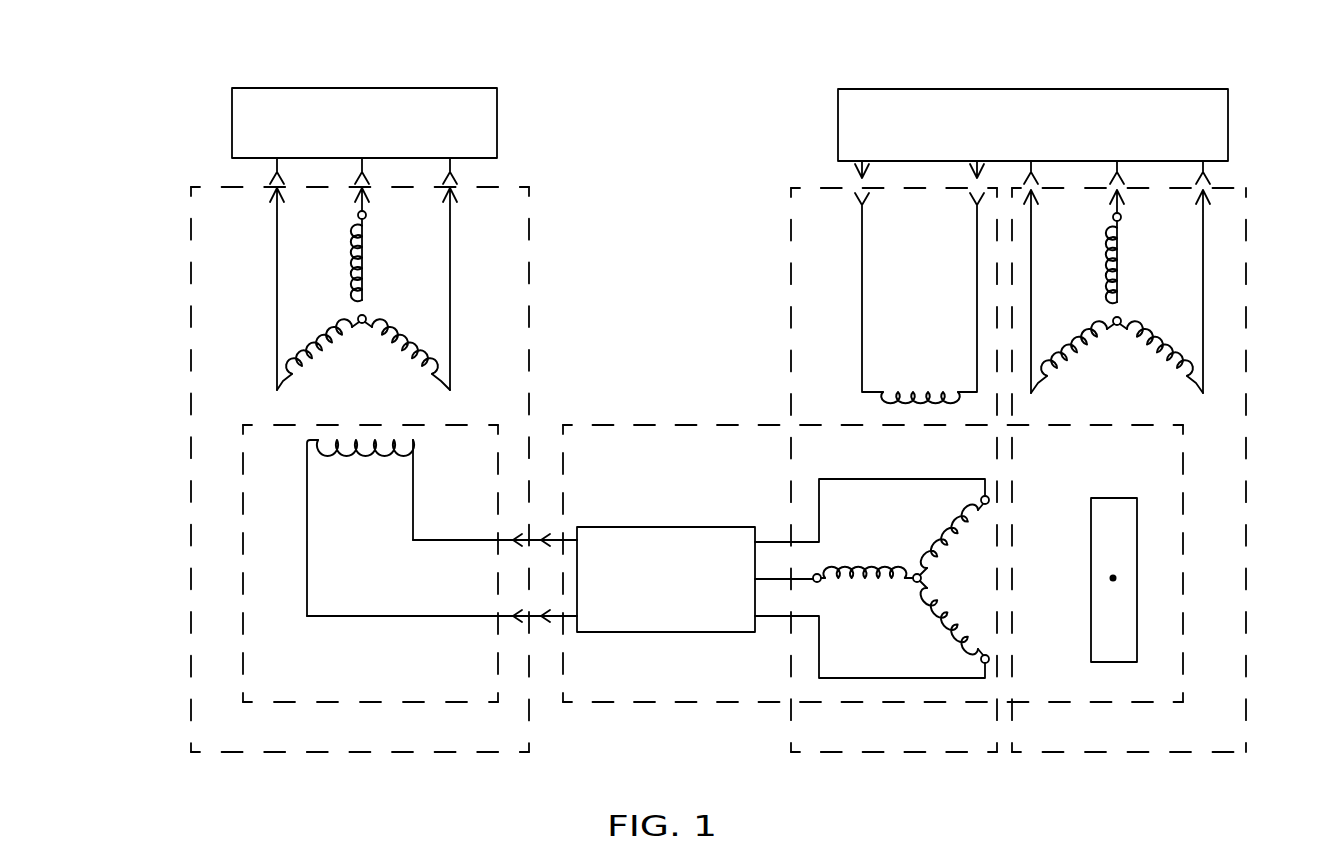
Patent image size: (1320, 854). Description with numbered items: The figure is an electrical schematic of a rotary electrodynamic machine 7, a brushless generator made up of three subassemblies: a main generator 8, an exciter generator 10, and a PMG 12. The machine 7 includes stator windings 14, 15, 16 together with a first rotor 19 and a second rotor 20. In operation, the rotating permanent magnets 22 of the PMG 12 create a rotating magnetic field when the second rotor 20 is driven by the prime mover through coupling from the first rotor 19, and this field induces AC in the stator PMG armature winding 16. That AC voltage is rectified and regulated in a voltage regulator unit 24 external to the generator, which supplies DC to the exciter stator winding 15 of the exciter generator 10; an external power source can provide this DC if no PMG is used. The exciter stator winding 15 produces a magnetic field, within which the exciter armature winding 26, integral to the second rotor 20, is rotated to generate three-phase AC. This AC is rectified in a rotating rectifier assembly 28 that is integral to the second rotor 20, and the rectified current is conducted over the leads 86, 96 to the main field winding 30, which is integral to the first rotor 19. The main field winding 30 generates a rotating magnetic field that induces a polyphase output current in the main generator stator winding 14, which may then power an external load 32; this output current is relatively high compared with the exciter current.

The rotary electrodynamic machine 7 is at (667, 155).
The main generator 8 is at (345, 753).
The exciter generator 10 is at (870, 753).
The PMG 12 is at (1125, 753).
The main generator stator winding 14 is at (356, 375).
The exciter stator winding 15 is at (890, 406).
The stator PMG armature winding 16 is at (1124, 373).
The first rotor 19 is at (262, 703).
The second rotor 20 is at (588, 703).
The permanent magnets 22 is at (1137, 651).
The voltage regulator unit 24 is at (990, 89).
The exciter armature winding 26 is at (973, 577).
The rotating rectifier assembly 28 is at (694, 633).
The main field winding 30 is at (414, 440).
The external load 32 is at (390, 87).
The positive lead 86 is at (513, 537).
The negative lead 96 is at (509, 619).